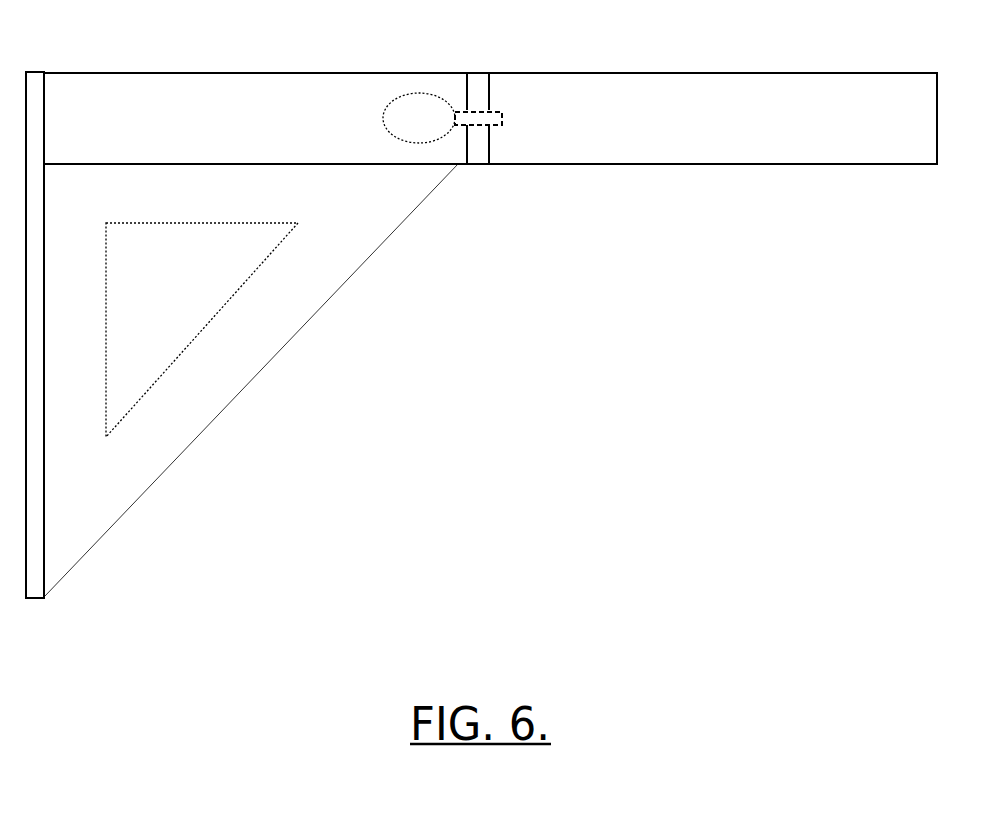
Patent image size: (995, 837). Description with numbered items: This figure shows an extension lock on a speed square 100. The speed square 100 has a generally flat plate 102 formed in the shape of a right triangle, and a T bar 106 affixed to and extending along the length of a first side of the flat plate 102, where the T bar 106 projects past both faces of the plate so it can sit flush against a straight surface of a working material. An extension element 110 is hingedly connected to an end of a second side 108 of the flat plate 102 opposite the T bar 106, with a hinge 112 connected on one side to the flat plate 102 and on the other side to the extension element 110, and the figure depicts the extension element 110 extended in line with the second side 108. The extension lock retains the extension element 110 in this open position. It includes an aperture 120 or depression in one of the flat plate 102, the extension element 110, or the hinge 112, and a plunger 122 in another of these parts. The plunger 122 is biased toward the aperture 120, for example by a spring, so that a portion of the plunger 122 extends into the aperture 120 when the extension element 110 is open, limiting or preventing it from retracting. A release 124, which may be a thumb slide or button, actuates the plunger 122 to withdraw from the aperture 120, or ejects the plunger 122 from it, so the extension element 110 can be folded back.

The speed square 100 is at (343, 380).
The flat plate 102 is at (230, 330).
The T bar 106 is at (75, 352).
The second side 108 is at (490, 99).
The extension element 110 is at (768, 61).
The hinge 112 is at (453, 161).
The aperture 120 is at (514, 79).
The plunger 122 is at (429, 65).
The release 124 is at (390, 92).